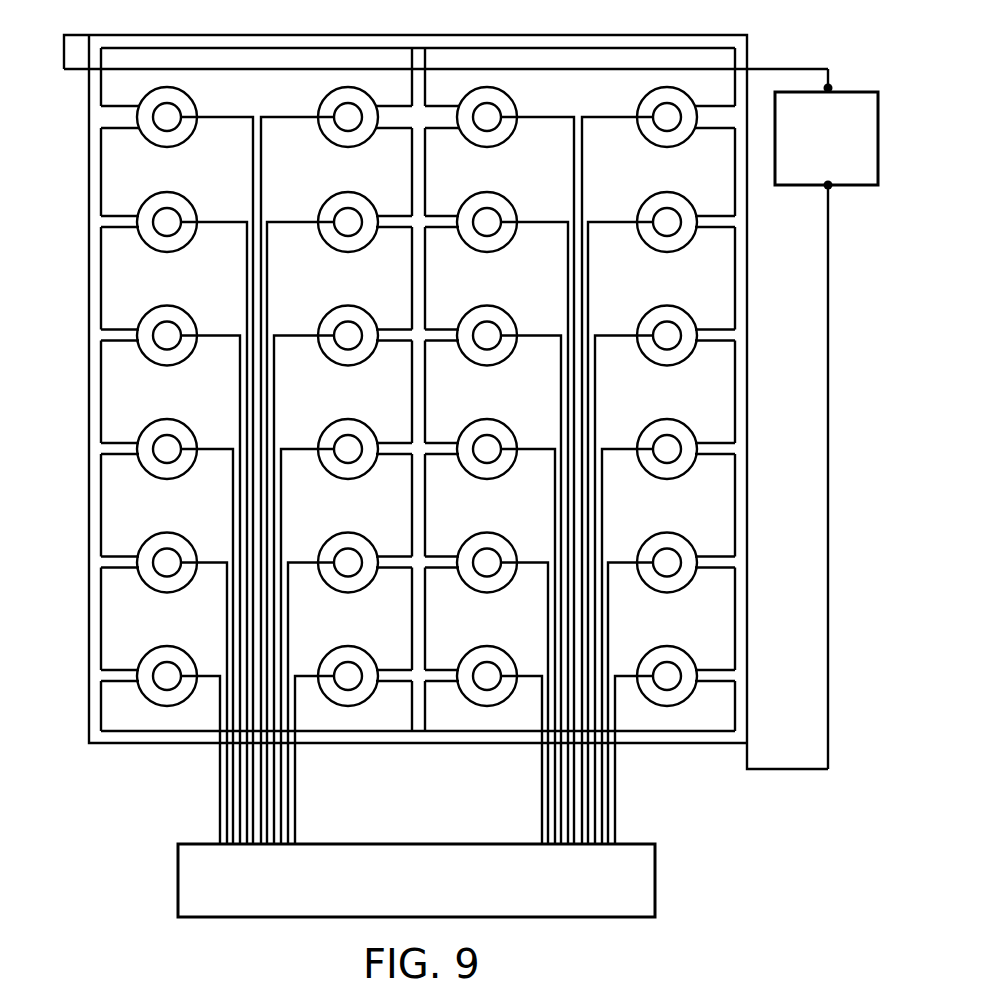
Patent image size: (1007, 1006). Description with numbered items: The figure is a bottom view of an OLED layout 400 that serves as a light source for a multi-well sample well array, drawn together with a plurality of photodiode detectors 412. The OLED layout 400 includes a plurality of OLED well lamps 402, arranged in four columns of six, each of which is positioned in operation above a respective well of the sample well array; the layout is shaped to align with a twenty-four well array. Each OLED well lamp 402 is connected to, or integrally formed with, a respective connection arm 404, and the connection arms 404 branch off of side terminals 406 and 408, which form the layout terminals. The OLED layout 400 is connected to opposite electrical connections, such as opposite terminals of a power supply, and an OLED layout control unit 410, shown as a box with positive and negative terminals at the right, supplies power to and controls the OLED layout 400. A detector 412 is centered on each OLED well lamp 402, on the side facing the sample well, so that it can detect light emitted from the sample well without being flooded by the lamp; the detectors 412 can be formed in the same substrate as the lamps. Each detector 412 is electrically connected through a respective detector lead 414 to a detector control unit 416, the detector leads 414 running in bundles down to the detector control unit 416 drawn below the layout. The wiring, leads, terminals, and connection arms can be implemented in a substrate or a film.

The OLED layout 400 is at (116, 761).
The OLED well lamp 402 is at (166, 142).
The connection arm 404 is at (123, 225).
The layout terminal 406 is at (95, 690).
The side terminal 408 is at (173, 737).
The OLED layout control unit 410 is at (808, 154).
The photodiode detector 412 is at (177, 107).
The detector lead 414 is at (240, 365).
The detector control unit 416 is at (395, 897).